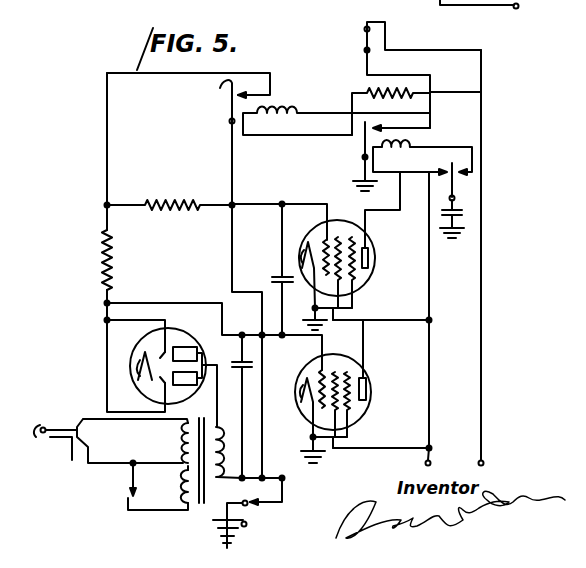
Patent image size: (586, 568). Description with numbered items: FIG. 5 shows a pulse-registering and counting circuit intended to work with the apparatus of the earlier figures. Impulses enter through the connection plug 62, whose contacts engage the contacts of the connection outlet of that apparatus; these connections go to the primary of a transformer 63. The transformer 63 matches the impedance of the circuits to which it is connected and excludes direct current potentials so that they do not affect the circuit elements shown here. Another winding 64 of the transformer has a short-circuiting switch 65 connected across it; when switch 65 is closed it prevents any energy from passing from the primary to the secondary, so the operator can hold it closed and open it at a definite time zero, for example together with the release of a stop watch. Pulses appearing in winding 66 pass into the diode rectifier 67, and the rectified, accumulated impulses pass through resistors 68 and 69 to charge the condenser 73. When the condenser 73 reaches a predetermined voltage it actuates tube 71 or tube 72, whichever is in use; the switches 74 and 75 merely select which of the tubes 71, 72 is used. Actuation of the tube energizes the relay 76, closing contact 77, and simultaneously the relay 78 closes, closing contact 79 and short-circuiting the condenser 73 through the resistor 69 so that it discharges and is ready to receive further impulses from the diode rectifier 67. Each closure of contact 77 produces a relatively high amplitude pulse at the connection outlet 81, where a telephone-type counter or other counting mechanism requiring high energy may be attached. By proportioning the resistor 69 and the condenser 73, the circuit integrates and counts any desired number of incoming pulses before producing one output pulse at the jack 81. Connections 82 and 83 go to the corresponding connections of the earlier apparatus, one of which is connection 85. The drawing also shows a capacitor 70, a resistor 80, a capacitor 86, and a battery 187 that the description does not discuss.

The connection plug 62 is at (55, 430).
The transformer 63 is at (197, 503).
The winding 64 is at (184, 487).
The short-circuiting switch 65 is at (126, 490).
The winding 66 is at (218, 441).
The diode rectifier 67 is at (170, 326).
The resistor 68 is at (112, 251).
The resistor 69 is at (160, 200).
The capacitor 70 is at (238, 360).
The tube 71 is at (370, 369).
The tube 72 is at (377, 258).
The condenser 73 is at (278, 275).
The switch 74 is at (250, 505).
The switch 75 is at (459, 172).
The relay 76 is at (416, 148).
The contact 77 is at (360, 124).
The relay 78 is at (281, 110).
The contact 79 is at (212, 102).
The resistor 80 is at (366, 88).
The connection outlet 81 is at (364, 23).
The connection 82 is at (432, 460).
The connection 83 is at (485, 459).
The connection 85 is at (514, 8).
The capacitor 86 is at (464, 213).
The battery 187 is at (213, 520).